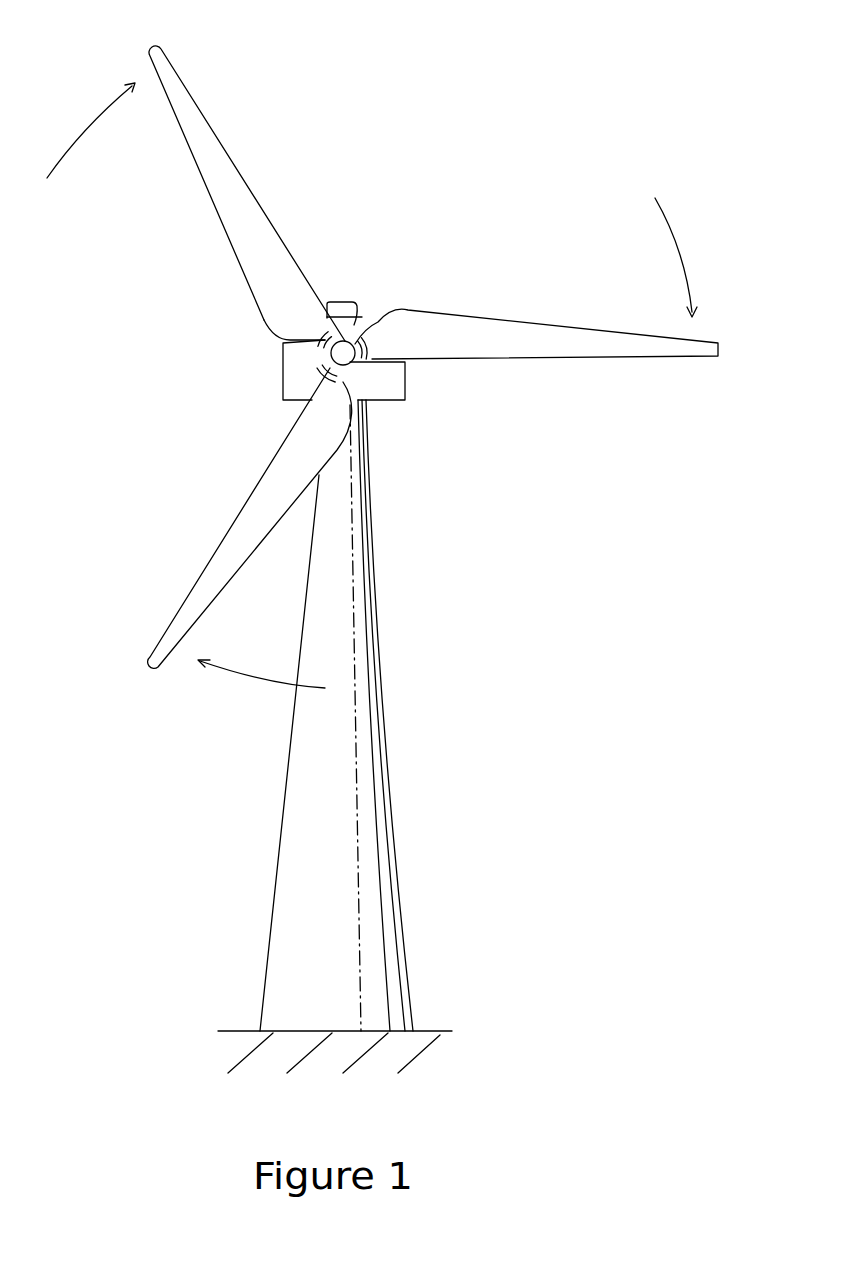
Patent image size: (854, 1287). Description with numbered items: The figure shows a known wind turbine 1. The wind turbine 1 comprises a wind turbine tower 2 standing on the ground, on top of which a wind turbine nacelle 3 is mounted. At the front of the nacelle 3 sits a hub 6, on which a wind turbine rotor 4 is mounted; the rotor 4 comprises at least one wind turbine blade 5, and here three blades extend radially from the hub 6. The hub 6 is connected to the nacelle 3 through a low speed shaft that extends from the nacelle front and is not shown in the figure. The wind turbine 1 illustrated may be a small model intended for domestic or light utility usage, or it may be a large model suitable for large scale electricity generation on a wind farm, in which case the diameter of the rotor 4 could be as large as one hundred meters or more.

The wind turbine 1 is at (545, 872).
The wind turbine tower 2 is at (391, 757).
The wind turbine nacelle 3 is at (395, 382).
The wind turbine rotor 4 is at (507, 170).
The wind turbine blade 5 is at (528, 328).
The hub 6 is at (354, 300).